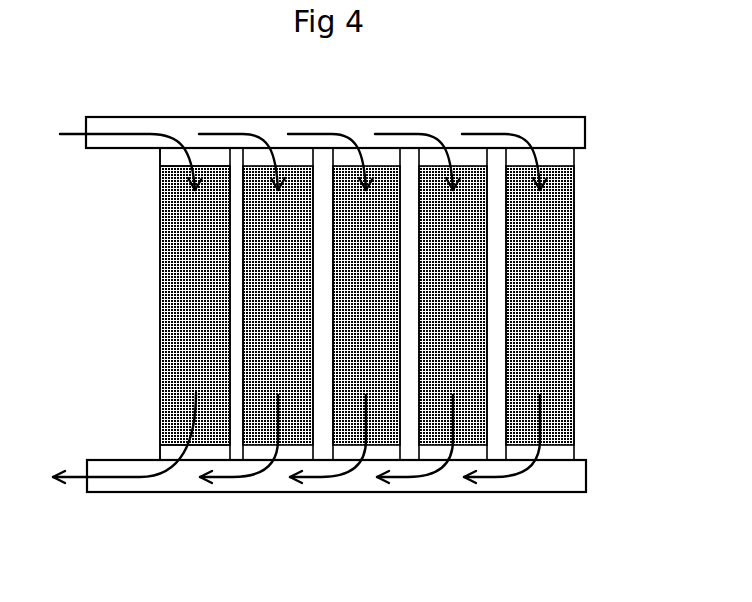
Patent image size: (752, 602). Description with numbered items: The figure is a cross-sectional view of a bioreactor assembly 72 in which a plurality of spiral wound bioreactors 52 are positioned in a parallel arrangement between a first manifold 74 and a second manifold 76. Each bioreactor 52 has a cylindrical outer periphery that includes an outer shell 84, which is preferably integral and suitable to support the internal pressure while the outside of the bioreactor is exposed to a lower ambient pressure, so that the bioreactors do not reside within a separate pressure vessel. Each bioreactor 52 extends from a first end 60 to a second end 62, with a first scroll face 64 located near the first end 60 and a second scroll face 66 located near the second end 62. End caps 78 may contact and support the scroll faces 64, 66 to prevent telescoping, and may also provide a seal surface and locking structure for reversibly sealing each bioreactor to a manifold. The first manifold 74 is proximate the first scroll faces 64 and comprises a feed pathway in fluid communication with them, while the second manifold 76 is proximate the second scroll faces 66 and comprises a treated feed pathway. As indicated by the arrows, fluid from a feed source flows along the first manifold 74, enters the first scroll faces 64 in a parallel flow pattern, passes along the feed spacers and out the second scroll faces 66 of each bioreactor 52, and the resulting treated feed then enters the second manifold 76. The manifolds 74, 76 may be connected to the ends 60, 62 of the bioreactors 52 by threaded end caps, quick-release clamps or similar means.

The bioreactor assembly 72 is at (146, 67).
The first manifold 74 is at (533, 117).
The second manifold 76 is at (208, 493).
The end cap 78 is at (574, 155).
The first end 60 is at (160, 150).
The first scroll face 64 is at (160, 167).
The bioreactor 52 is at (160, 215).
The outer shell 84 is at (160, 270).
The second scroll face 66 is at (158, 446).
The second end 62 is at (158, 458).